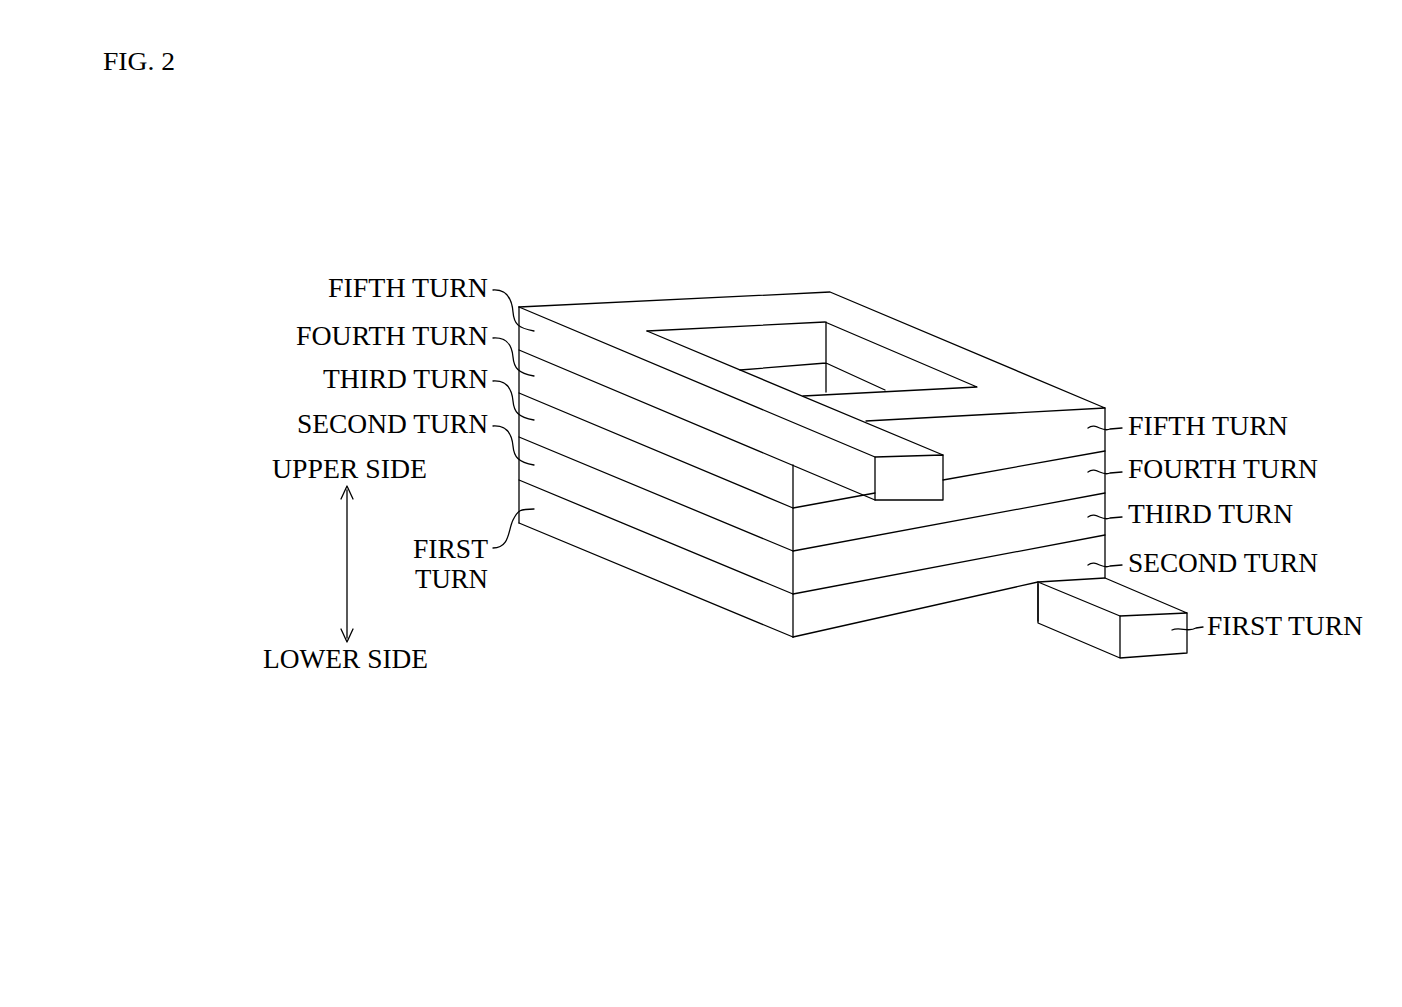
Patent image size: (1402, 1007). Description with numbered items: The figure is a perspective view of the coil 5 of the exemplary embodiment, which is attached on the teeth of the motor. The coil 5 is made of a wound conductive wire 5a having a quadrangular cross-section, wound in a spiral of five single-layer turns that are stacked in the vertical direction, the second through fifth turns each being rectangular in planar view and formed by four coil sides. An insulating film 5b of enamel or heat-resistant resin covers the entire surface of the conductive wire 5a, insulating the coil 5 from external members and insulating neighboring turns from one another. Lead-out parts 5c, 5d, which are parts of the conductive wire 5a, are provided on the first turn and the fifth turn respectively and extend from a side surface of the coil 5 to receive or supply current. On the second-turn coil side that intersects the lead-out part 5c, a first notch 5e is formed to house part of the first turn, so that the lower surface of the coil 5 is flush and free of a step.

The coil 5 is at (853, 452).
The conductive wire 5a is at (614, 300).
The insulating film 5b is at (733, 312).
The lead-out part 5c is at (1148, 640).
The lead-out part 5d is at (855, 478).
The first notch 5e is at (1036, 602).